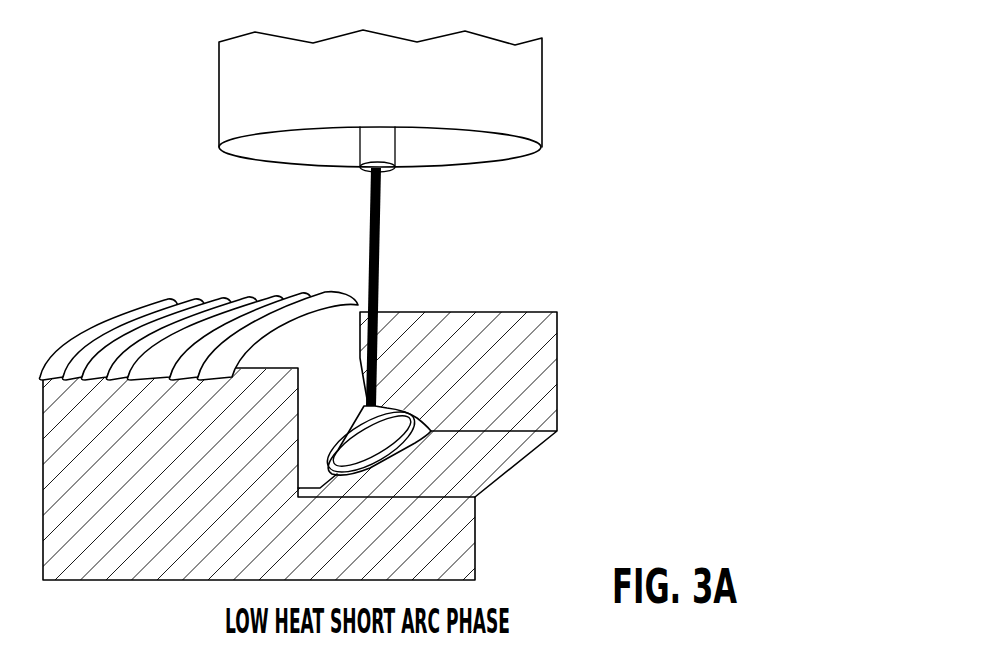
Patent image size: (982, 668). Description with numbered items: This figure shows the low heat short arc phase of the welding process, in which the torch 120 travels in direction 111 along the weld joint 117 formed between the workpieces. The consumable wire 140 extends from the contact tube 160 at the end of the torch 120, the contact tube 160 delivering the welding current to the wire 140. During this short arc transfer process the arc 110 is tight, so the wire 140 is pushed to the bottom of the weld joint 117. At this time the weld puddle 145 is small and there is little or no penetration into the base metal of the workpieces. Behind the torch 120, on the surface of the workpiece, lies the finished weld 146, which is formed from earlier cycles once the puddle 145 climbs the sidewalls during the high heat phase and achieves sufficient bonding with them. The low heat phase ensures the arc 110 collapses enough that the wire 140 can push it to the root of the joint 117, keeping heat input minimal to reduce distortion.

The arc 110 is at (370, 407).
The direction 111 is at (555, 131).
The weld joint 117 is at (518, 285).
The torch 120 is at (542, 72).
The wire 140 is at (381, 232).
The weld puddle 145 is at (405, 442).
The finished weld 146 is at (184, 299).
The contact tube 160 is at (389, 172).